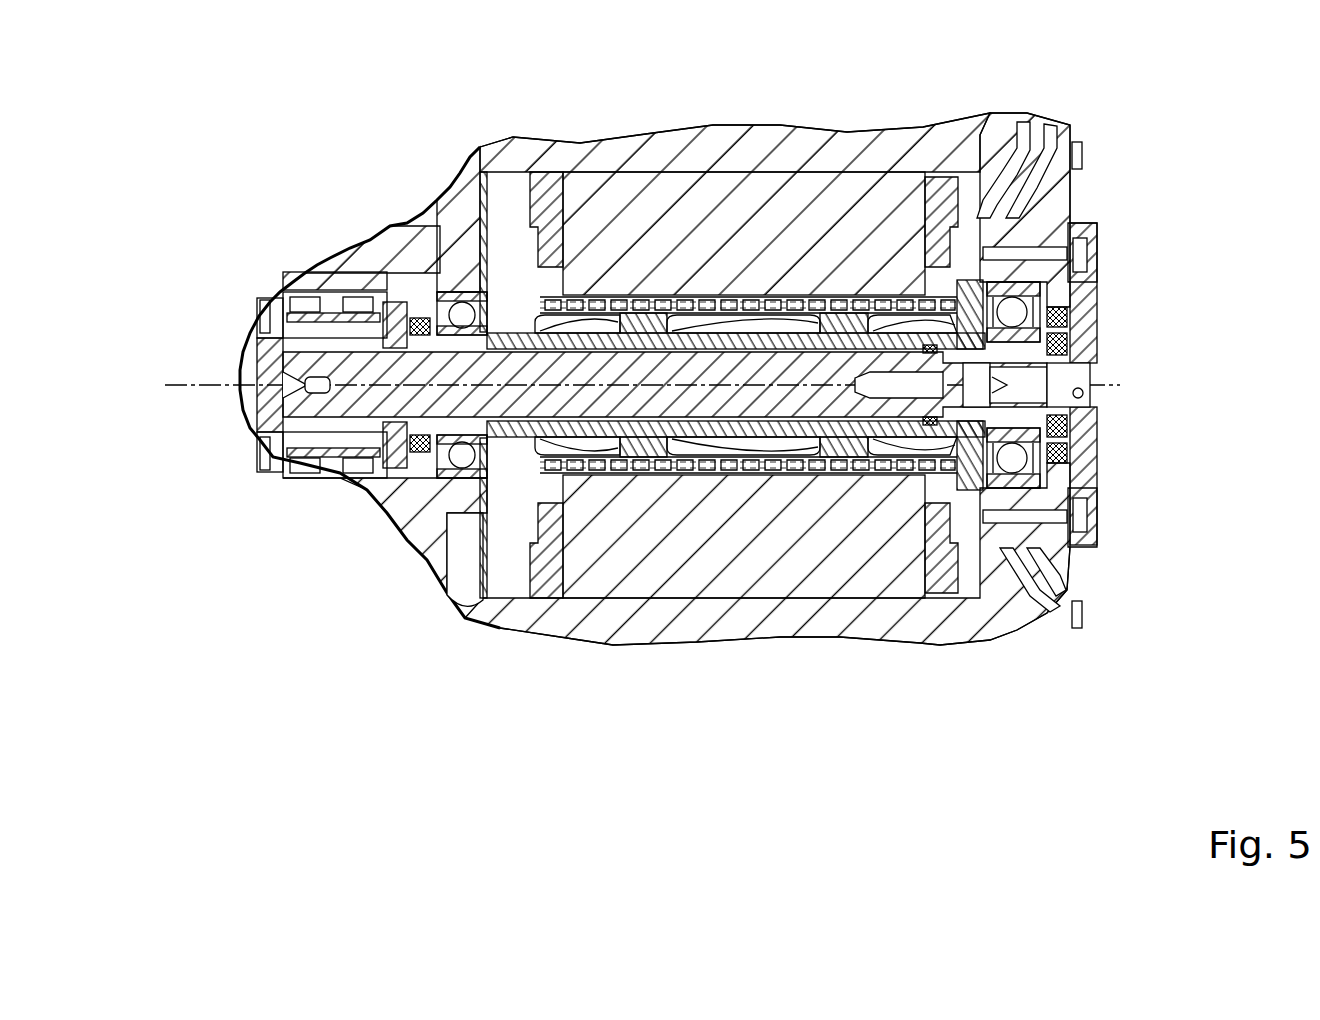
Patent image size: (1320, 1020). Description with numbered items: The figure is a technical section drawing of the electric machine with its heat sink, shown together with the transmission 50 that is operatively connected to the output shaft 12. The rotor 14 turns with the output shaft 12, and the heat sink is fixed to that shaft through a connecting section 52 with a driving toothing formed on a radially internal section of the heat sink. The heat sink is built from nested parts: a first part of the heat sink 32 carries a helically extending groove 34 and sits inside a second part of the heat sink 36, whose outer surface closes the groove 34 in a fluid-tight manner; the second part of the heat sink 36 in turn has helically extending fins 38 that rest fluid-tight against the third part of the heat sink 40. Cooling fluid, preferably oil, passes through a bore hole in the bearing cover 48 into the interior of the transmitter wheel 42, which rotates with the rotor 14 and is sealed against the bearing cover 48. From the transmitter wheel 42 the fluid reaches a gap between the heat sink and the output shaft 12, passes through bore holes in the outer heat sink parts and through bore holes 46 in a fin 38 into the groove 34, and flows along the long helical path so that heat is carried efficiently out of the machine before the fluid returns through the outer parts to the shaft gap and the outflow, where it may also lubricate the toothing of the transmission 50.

The output shaft 12 is at (500, 370).
The rotor 14 is at (820, 543).
The first part of the heat sink 32 is at (795, 287).
The helically extending groove 34 is at (718, 297).
The second part of the heat sink 36 is at (612, 295).
The helically extending fins 38 is at (652, 310).
The third part of the heat sink 40 is at (845, 333).
The transmitter wheel 42 is at (1053, 320).
The bore holes 46 is at (940, 443).
The bearing cover 48 is at (1080, 340).
The transmission 50 is at (285, 255).
The connecting section 52 is at (860, 427).